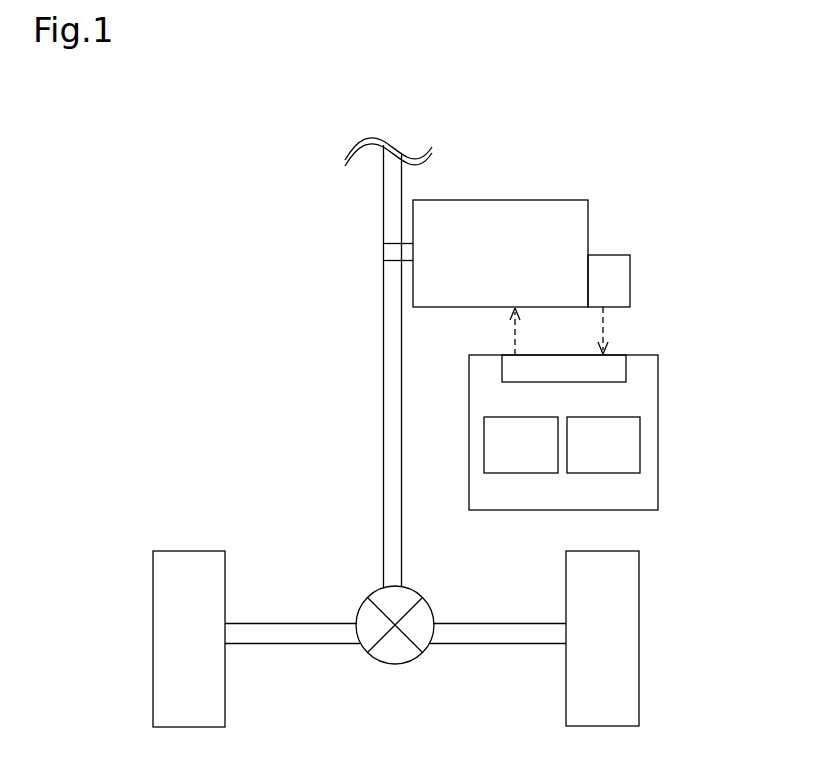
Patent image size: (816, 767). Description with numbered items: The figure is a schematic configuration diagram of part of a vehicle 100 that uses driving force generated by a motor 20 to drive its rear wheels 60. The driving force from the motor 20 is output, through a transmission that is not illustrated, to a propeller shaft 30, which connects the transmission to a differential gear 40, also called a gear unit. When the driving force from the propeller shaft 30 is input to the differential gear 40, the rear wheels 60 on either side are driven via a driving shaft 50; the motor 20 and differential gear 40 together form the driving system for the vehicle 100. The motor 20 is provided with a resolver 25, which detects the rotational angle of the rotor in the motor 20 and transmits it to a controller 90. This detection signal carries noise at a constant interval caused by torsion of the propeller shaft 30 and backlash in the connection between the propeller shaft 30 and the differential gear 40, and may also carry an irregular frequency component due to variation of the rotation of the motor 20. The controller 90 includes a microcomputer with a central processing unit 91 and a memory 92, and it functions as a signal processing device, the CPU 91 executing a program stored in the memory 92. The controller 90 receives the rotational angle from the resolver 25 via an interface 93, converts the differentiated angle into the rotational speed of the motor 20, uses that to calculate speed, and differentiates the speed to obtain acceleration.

The vehicle 100 is at (620, 135).
The motor 20 is at (555, 200).
The resolver 25 is at (613, 255).
The propeller shaft 30 is at (402, 483).
The differential gear 40 is at (418, 593).
The driving shaft 50 is at (255, 623).
The rear wheels 60 is at (193, 551).
The controller 90 is at (672, 370).
The central processing unit (CPU) 91 is at (500, 417).
The memory 92 is at (590, 417).
The interface 93 is at (618, 355).